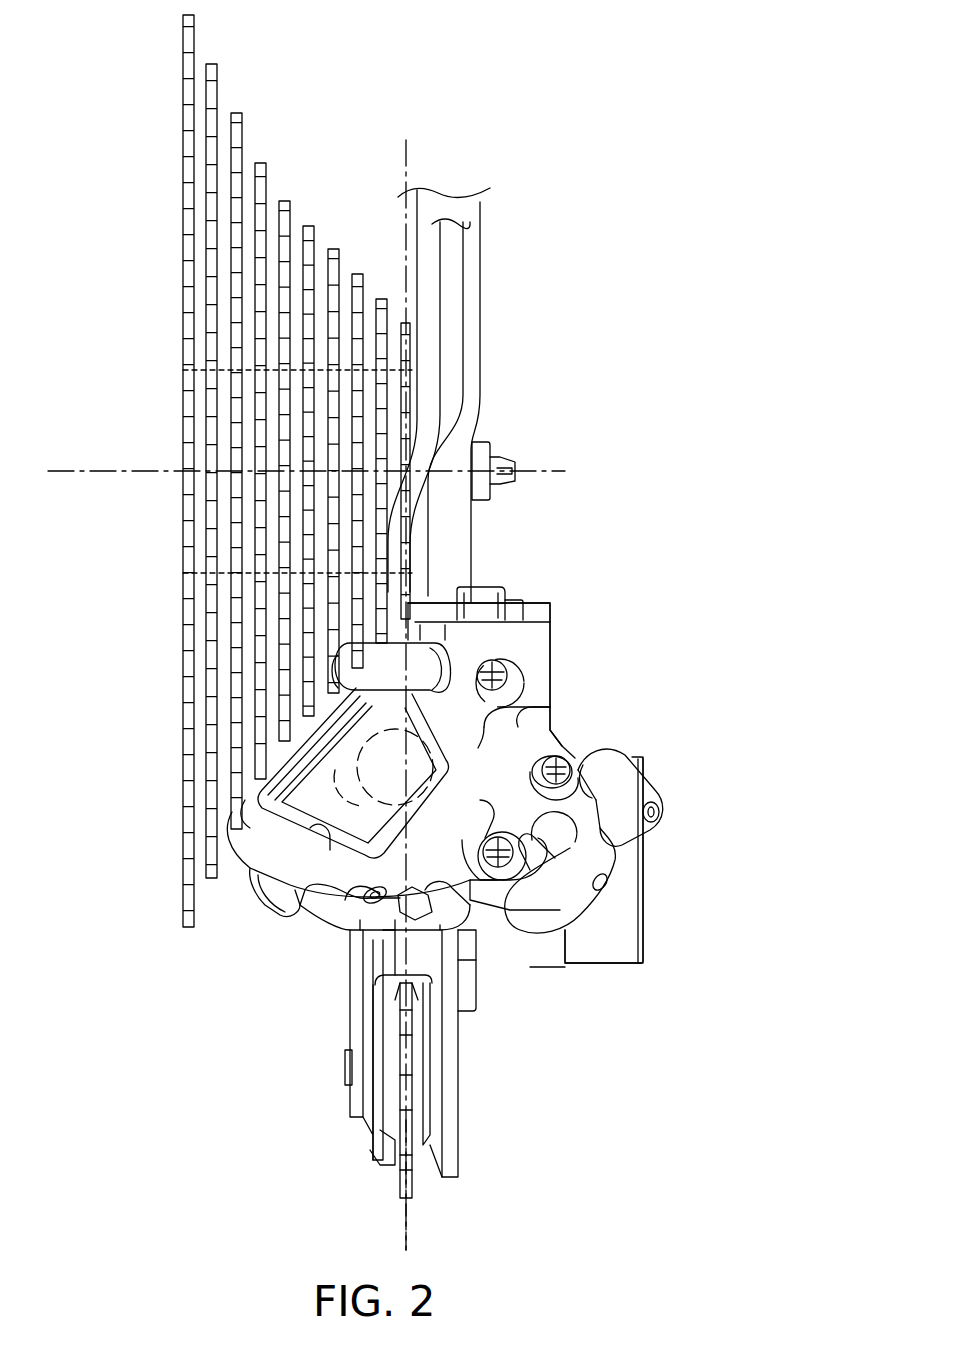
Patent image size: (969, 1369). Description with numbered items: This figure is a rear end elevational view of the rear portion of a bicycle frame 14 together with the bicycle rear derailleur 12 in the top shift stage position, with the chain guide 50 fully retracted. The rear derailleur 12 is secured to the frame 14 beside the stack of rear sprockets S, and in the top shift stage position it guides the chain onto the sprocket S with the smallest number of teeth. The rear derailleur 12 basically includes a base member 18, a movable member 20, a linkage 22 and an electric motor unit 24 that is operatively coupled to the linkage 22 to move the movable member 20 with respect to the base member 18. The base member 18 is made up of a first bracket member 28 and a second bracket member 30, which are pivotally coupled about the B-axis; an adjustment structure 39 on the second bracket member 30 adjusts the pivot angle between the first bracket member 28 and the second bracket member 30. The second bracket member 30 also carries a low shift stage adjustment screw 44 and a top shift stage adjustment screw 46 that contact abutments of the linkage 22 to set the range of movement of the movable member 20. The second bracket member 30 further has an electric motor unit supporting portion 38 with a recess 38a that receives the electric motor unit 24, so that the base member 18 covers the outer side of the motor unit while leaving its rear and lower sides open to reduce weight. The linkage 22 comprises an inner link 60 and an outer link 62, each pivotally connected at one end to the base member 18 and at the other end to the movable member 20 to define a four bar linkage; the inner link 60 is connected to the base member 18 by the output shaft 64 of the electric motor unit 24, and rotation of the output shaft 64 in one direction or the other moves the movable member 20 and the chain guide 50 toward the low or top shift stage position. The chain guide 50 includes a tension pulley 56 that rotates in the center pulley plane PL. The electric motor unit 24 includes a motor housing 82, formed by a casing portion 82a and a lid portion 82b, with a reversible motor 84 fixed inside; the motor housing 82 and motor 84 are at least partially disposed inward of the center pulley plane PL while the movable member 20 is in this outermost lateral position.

The rear sprockets S is at (258, 128).
The bicycle rear derailleur 12 is at (583, 589).
The bicycle frame 14 is at (487, 230).
The base member 18 is at (290, 890).
The movable member 20 is at (662, 905).
The linkage 22 is at (622, 930).
The electric motor unit 24 is at (296, 824).
The first bracket member 28 is at (485, 588).
The second bracket member 30 is at (560, 668).
The electric motor unit supporting portion 38 is at (345, 905).
The recess 38a is at (325, 824).
The adjustment structure 39 is at (505, 666).
The low shift stage adjustment screw 44 is at (484, 848).
The top shift stage adjustment screw 46 is at (548, 766).
The chain guide 50 is at (465, 1046).
The tension pulley 56 is at (418, 1188).
The inner link 60 is at (582, 935).
The outer link 62 is at (614, 785).
The output shaft 64 is at (506, 930).
The motor housing 82 is at (108, 705).
The casing portion 82a is at (330, 755).
The lid portion 82b is at (300, 800).
The motor 84 is at (377, 767).
The center pulley plane PL is at (402, 1218).